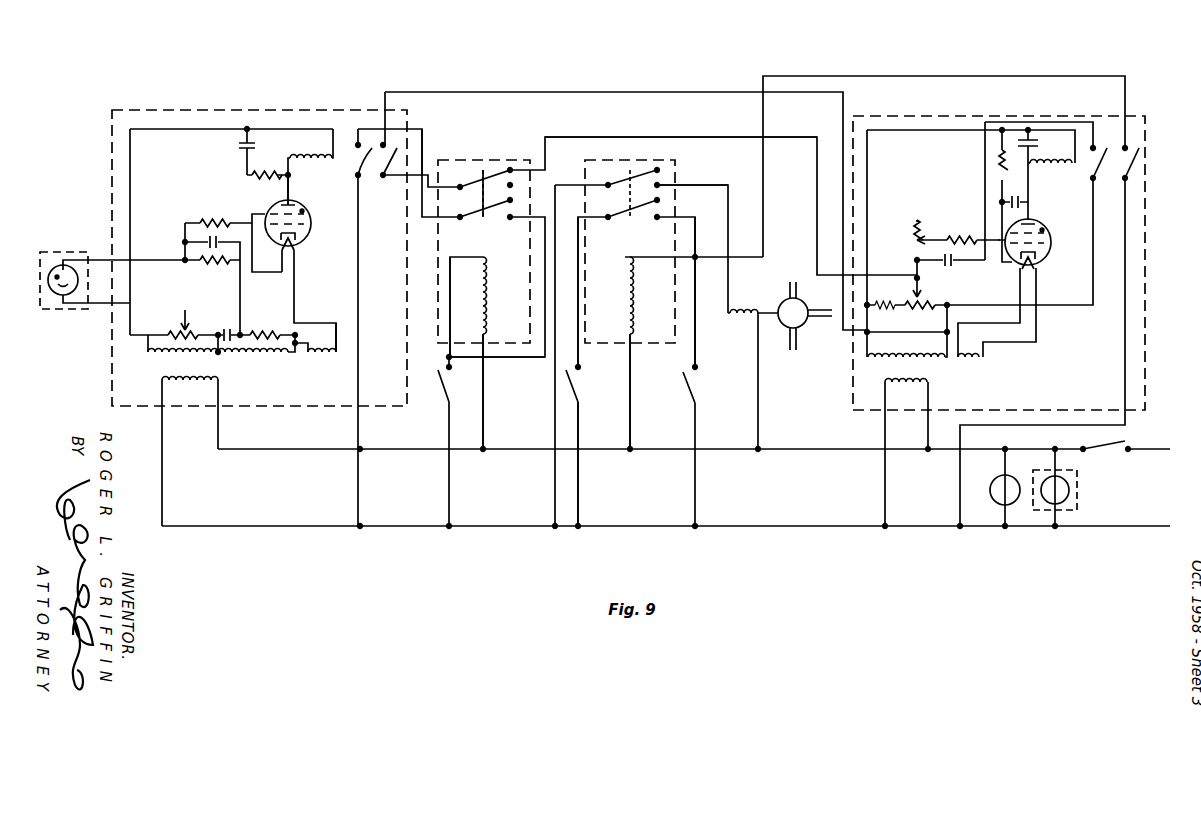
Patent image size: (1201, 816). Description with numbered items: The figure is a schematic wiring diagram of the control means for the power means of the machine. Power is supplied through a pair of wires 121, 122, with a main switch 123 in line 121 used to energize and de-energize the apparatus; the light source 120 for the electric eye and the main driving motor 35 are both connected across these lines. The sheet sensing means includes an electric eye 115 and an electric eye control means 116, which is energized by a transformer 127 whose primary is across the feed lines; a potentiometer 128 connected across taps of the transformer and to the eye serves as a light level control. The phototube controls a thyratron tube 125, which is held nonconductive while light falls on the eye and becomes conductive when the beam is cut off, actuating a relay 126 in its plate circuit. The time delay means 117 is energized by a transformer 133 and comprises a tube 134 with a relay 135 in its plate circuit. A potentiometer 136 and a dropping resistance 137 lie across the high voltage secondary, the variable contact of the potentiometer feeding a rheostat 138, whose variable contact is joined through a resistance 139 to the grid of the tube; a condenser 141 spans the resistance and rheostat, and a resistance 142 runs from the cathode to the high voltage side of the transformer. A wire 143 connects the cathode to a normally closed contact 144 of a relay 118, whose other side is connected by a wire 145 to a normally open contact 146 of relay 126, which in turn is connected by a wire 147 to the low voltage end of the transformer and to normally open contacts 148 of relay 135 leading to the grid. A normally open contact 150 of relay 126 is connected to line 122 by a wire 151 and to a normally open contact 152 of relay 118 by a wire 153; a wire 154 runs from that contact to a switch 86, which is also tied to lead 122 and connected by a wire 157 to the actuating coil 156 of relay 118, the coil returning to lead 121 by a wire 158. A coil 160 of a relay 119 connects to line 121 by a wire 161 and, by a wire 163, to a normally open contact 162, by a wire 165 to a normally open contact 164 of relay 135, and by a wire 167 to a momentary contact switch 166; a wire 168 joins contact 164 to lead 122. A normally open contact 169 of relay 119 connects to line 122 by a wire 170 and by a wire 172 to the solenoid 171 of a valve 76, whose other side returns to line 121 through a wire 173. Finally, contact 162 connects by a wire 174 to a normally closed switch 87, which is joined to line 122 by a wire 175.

The main driving motor 35 is at (993, 498).
The valve 76 is at (806, 305).
The switch 86 is at (440, 395).
The normally closed switch 87 is at (582, 385).
The electric eye 115 is at (67, 246).
The electric eye control means 116 is at (294, 101).
The time delay means 117 is at (1057, 404).
The relay 118 is at (510, 154).
The relay 119 is at (691, 164).
The light source 120 is at (1079, 485).
The wire 121 is at (286, 449).
The wire 122 is at (263, 526).
The switch 123 is at (1112, 445).
The thyratron tube 125 is at (311, 222).
The relay 126 is at (321, 172).
The transformer 127 is at (268, 358).
The potentiometer 128 is at (200, 330).
The transformer 133 is at (938, 361).
The tube 134 is at (1052, 228).
The relay 135 is at (1052, 174).
The potentiometer 136 is at (995, 254).
The dropping resistance 137 is at (886, 303).
The rheostat 138 is at (914, 222).
The resistance 139 is at (964, 238).
The condenser 141 is at (952, 266).
The resistance 142 is at (1000, 170).
The wire 143 is at (620, 137).
The normally closed contact 144 is at (505, 168).
The wire 145 is at (394, 195).
The normally open contact 146 is at (398, 157).
The wire 147 is at (528, 92).
The normally open contacts 148 is at (1109, 175).
The normally open contact 150 is at (328, 164).
The wire 151 is at (360, 468).
The normally open contact 152 is at (488, 212).
The wire 153 is at (424, 136).
The wire 154 is at (516, 358).
The actuating coil 156 is at (492, 305).
The wire 157 is at (450, 277).
The wire 158 is at (484, 417).
The coil 160 is at (638, 292).
The wire 161 is at (631, 425).
The normally open contact 162 is at (620, 218).
The wire 163 is at (695, 237).
The normally open contact 164 is at (1140, 169).
The wire 165 is at (1082, 78).
The momentary contact switch 166 is at (697, 388).
The wire 167 is at (696, 340).
The wire 168 is at (1124, 342).
The normally open contact 169 is at (624, 172).
The wire 170 is at (555, 497).
The solenoid 171 is at (757, 306).
The wire 172 is at (728, 214).
The wire 173 is at (759, 402).
The wire 174 is at (580, 297).
The wire 175 is at (578, 484).